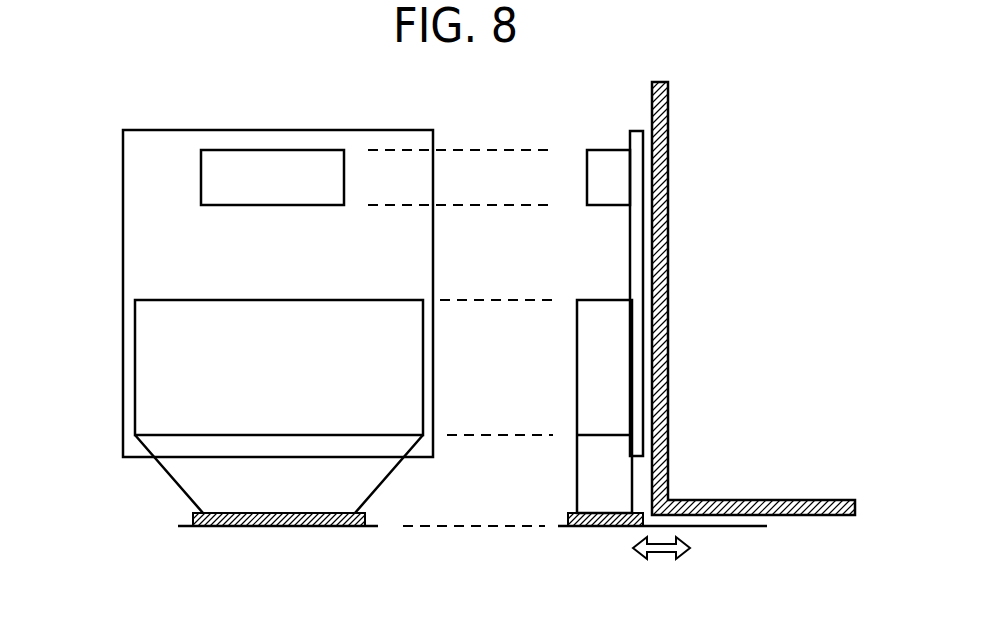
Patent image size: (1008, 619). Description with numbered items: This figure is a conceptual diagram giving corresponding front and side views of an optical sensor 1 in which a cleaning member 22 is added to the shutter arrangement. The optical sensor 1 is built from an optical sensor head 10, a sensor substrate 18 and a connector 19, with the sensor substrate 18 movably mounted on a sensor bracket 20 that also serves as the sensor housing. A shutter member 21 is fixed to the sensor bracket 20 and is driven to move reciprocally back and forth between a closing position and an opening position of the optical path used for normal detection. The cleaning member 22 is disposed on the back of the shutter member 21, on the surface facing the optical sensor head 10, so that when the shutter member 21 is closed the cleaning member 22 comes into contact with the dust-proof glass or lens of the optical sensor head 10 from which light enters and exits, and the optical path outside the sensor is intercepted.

The optical sensor 1 is at (92, 185).
The optical sensor head 10 is at (135, 370).
The sensor substrate 18 is at (123, 257).
The connector 19 is at (201, 171).
The sensor bracket 20 is at (668, 200).
The shutter member 21 is at (340, 527).
The cleaning member 22 is at (218, 527).